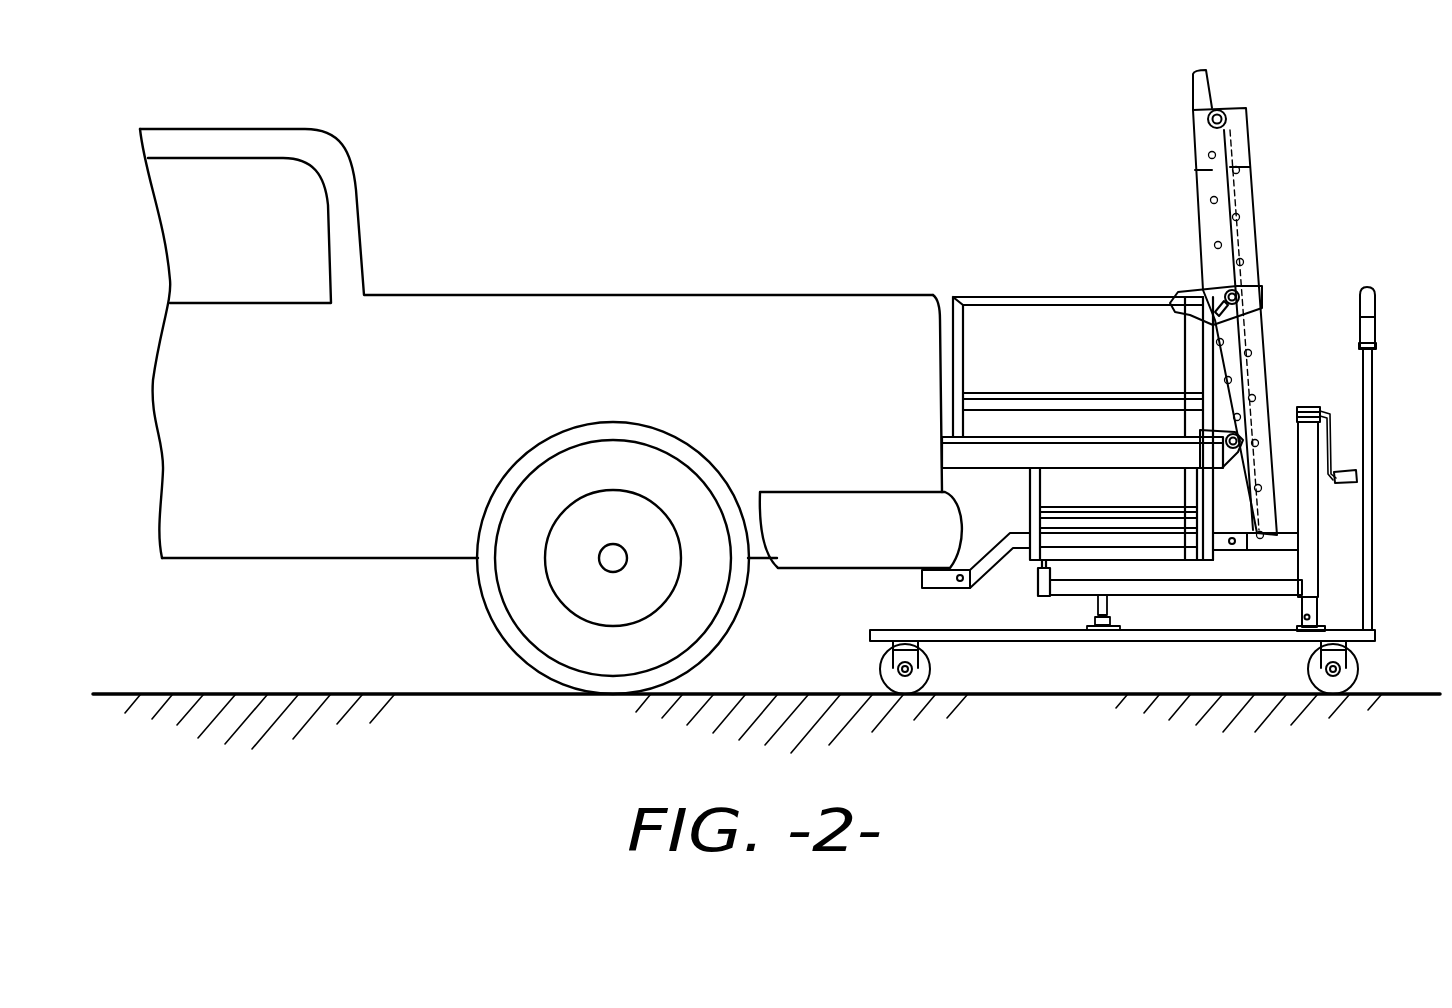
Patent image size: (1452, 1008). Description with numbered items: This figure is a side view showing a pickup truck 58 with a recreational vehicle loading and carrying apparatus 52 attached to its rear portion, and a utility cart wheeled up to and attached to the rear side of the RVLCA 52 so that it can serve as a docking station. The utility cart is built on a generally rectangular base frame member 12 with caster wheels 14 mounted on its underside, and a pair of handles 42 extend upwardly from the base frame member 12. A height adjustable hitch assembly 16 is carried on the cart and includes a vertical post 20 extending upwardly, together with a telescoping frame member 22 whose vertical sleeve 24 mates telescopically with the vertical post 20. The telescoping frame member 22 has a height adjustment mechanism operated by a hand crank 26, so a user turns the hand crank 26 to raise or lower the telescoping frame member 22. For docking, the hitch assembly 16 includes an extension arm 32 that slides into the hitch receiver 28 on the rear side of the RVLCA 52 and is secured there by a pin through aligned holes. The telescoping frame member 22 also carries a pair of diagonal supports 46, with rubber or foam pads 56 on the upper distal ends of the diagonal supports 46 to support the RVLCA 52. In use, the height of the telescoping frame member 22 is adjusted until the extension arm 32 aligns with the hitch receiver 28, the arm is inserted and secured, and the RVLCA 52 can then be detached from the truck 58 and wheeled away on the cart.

The truck 58 is at (585, 241).
The recreational vehicle loading and carrying apparatus 52 is at (1078, 298).
The handles 42 is at (1377, 307).
The telescoping frame member 22 is at (1308, 442).
The hand crank 26 is at (1347, 470).
The height adjustable hitch assembly 16 is at (1300, 490).
The vertical sleeve 24 is at (1307, 525).
The vertical post 20 is at (1310, 607).
The caster wheels 14 is at (923, 676).
The hitch receiver 28 is at (932, 582).
The extension arm 32 is at (992, 557).
The pads 56 is at (1108, 625).
The base frame member 12 is at (1180, 633).
The diagonal supports 46 is at (1222, 587).